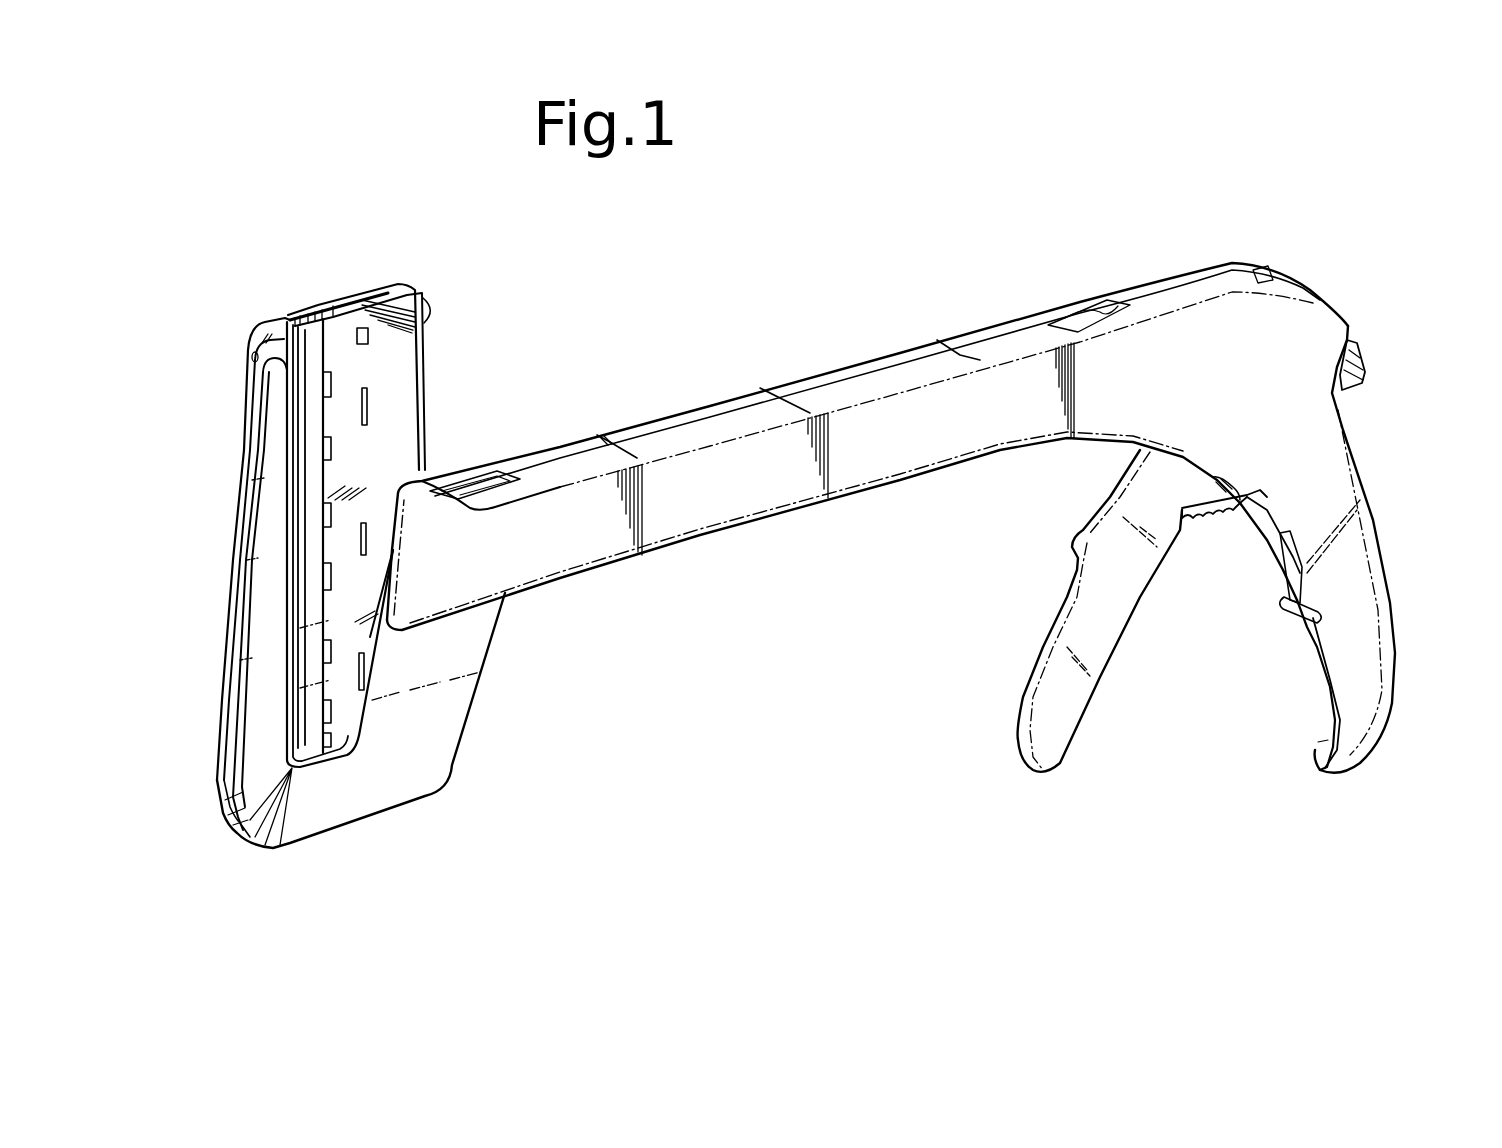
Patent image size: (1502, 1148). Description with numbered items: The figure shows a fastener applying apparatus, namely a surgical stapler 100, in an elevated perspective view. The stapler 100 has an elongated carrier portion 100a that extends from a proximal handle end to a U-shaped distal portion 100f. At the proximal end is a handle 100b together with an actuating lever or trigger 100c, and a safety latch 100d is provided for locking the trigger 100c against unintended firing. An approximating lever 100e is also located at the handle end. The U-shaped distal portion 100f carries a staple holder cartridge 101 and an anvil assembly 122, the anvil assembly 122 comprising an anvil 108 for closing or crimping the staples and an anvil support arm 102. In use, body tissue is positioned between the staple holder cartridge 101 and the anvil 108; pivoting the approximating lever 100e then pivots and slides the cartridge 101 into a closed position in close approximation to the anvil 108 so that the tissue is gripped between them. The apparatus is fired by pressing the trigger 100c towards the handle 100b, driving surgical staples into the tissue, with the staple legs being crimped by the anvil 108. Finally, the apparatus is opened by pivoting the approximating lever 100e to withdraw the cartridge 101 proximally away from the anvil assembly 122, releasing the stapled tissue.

The surgical stapler 100 is at (898, 250).
The elongated carrier portion 100a is at (723, 397).
The handle 100b is at (1393, 621).
The actuating lever or trigger 100c is at (1043, 662).
The safety latch 100d is at (1207, 520).
The approximating lever 100e is at (1362, 357).
The U-shaped distal portion 100f is at (370, 820).
The staple holder cartridge 101 is at (365, 303).
The anvil support arm 102 is at (237, 652).
The anvil 108 is at (297, 485).
The anvil assembly 122 is at (233, 567).